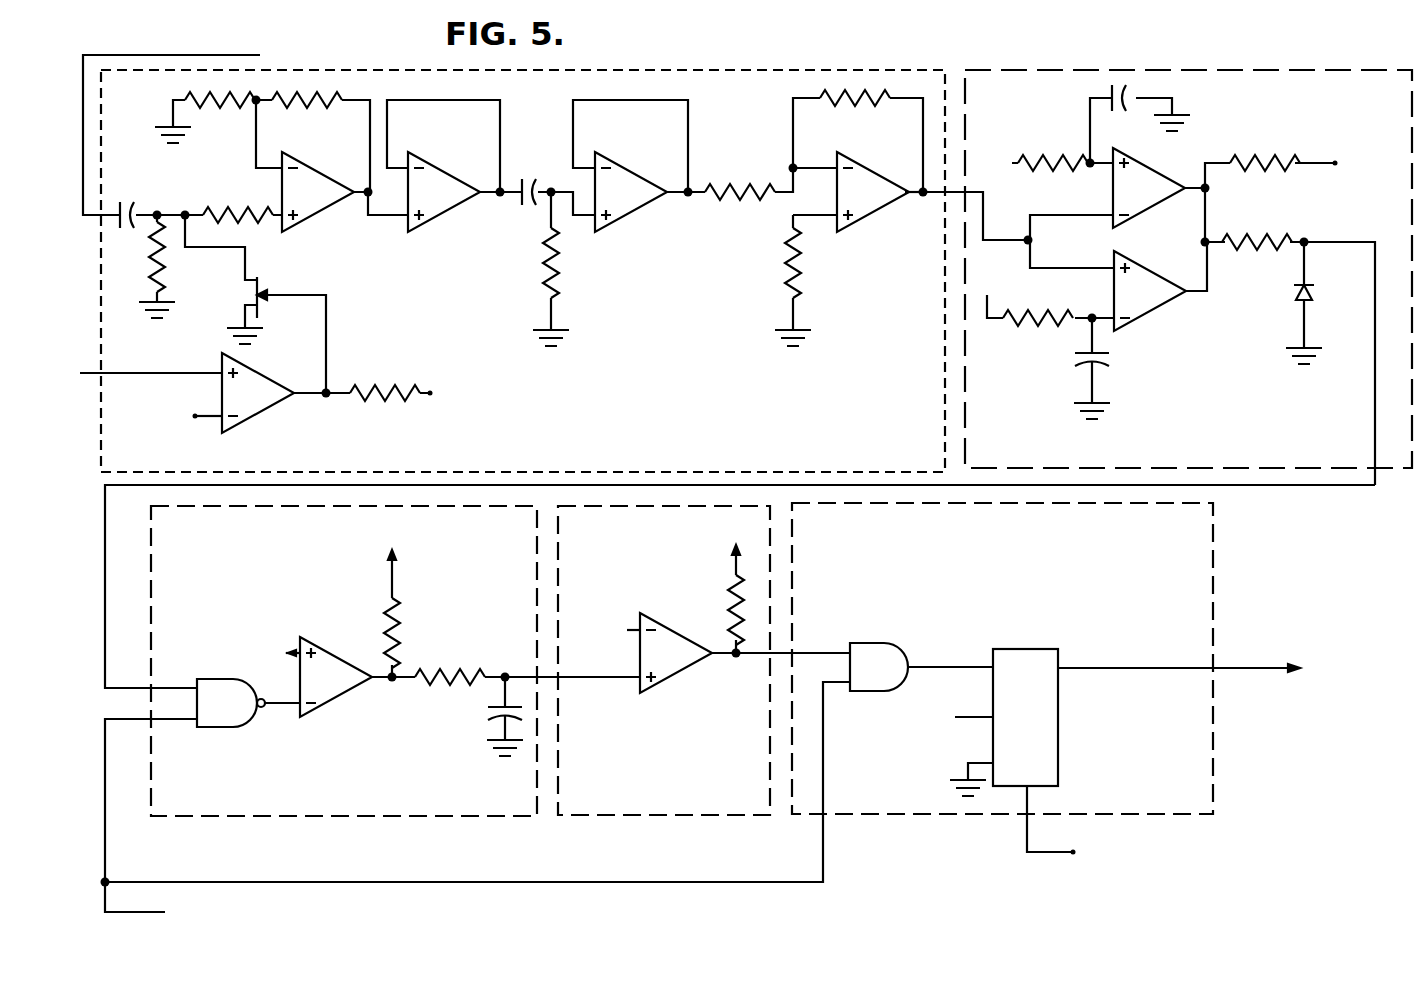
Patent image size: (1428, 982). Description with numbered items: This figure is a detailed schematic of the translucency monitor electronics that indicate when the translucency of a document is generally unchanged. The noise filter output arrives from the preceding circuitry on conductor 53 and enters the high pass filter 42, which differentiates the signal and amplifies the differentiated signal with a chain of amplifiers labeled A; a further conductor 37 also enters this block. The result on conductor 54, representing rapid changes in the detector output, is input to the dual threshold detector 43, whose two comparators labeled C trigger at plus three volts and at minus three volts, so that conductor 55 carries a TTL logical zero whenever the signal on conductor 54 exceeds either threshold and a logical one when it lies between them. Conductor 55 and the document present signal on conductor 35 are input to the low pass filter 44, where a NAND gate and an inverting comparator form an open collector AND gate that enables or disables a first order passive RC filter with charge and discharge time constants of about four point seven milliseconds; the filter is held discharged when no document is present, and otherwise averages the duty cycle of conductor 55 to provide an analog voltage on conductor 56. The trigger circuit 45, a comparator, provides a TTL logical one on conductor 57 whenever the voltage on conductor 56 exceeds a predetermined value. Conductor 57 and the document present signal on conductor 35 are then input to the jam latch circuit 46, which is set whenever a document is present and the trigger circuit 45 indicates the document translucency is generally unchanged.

The document present signal conductor 35 is at (125, 722).
The comparator input line 37 is at (150, 373).
The high pass filter 42 is at (667, 70).
The dual threshold detector 43 is at (1021, 70).
The low pass filter 44 is at (445, 818).
The trigger circuit 45 is at (665, 815).
The jam latch circuit 46 is at (912, 818).
The conductor 53 is at (153, 55).
The conductor 54 is at (953, 190).
The conductor 55 is at (1345, 485).
The conductor 56 is at (546, 682).
The conductor 57 is at (782, 656).